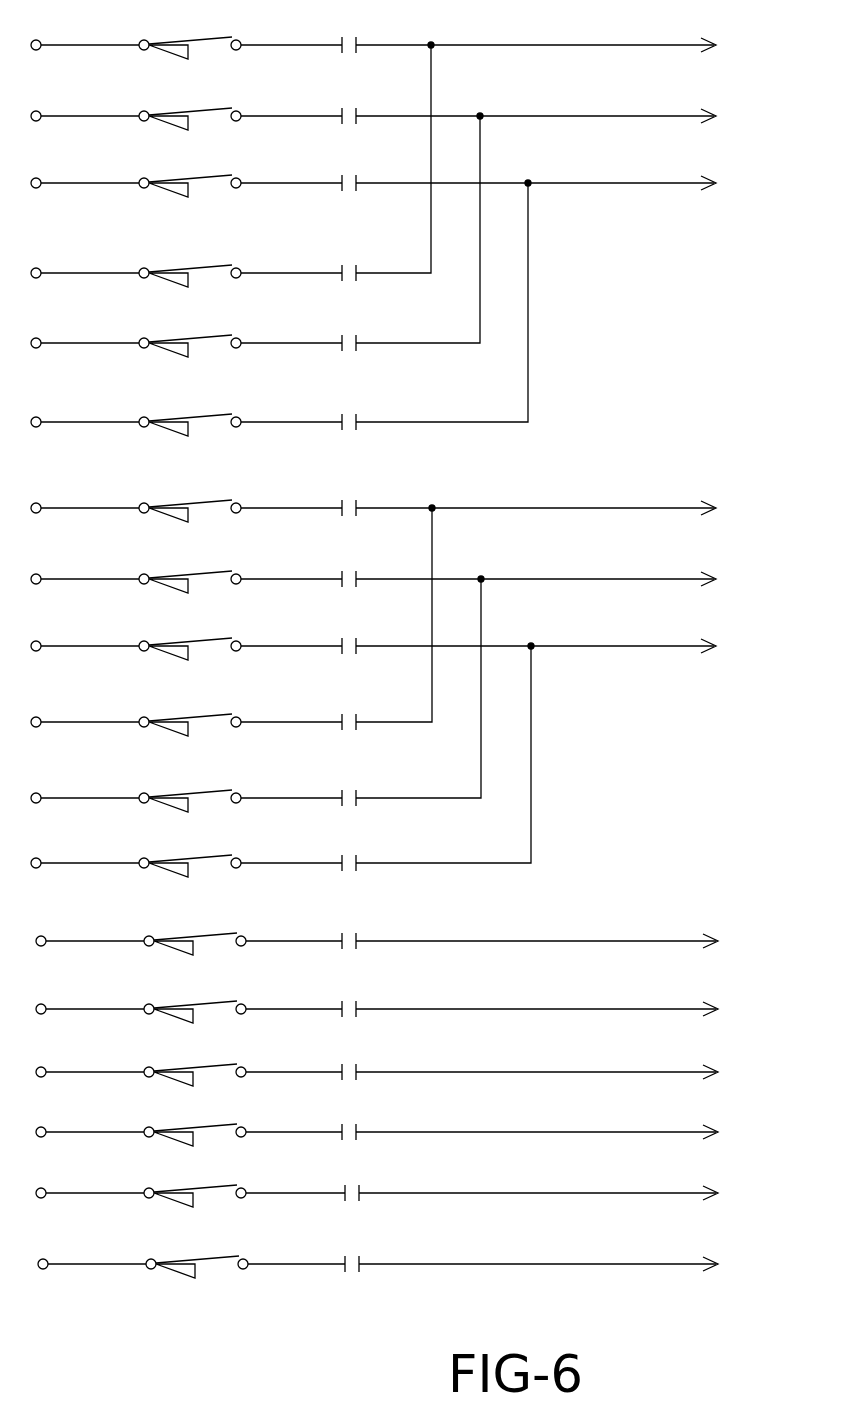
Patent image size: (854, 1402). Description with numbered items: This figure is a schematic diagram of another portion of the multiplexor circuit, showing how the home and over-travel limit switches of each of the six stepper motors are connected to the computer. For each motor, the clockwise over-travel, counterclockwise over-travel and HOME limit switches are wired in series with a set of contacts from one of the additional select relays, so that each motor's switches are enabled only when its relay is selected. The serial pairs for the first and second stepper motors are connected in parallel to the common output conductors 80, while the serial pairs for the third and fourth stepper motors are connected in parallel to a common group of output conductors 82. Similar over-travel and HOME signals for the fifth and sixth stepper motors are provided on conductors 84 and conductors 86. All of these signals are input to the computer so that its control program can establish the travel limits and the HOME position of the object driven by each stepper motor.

The common output conductors 80 is at (783, 72).
The common group of output conductors 82 is at (727, 538).
The conductors 84 is at (770, 1054).
The conductors 86 is at (775, 1193).